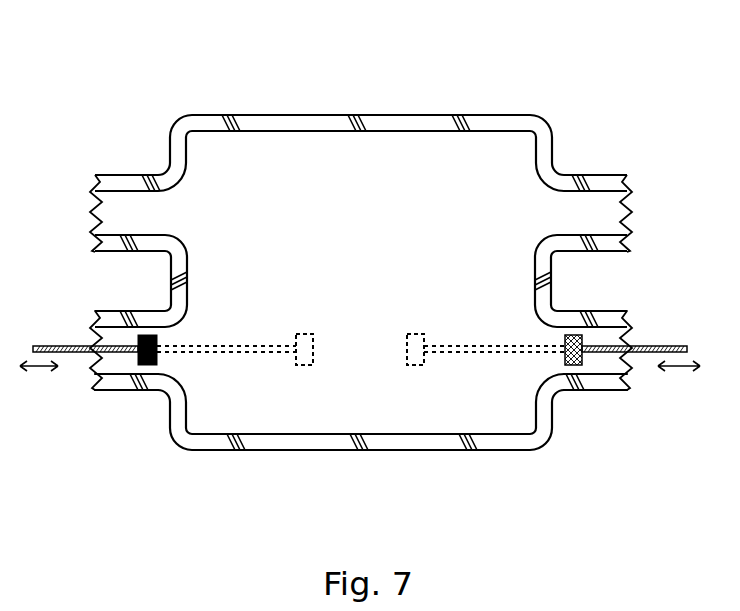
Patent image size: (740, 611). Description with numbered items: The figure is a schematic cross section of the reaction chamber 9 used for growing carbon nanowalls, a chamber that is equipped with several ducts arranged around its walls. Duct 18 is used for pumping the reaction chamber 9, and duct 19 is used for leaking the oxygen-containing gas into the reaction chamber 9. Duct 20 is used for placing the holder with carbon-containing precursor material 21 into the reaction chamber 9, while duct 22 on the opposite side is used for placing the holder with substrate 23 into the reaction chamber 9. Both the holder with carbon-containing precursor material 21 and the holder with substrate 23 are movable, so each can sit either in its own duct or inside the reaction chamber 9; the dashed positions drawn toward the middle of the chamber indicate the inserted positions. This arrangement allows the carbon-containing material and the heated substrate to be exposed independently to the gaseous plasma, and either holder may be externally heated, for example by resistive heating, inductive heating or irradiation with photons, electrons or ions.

The reaction chamber 9 is at (361, 243).
The duct 18 is at (95, 176).
The duct 19 is at (632, 177).
The duct 20 is at (103, 281).
The duct 22 is at (612, 281).
The holder with carbon-containing precursor material 21 is at (95, 390).
The holder with substrate 23 is at (626, 390).